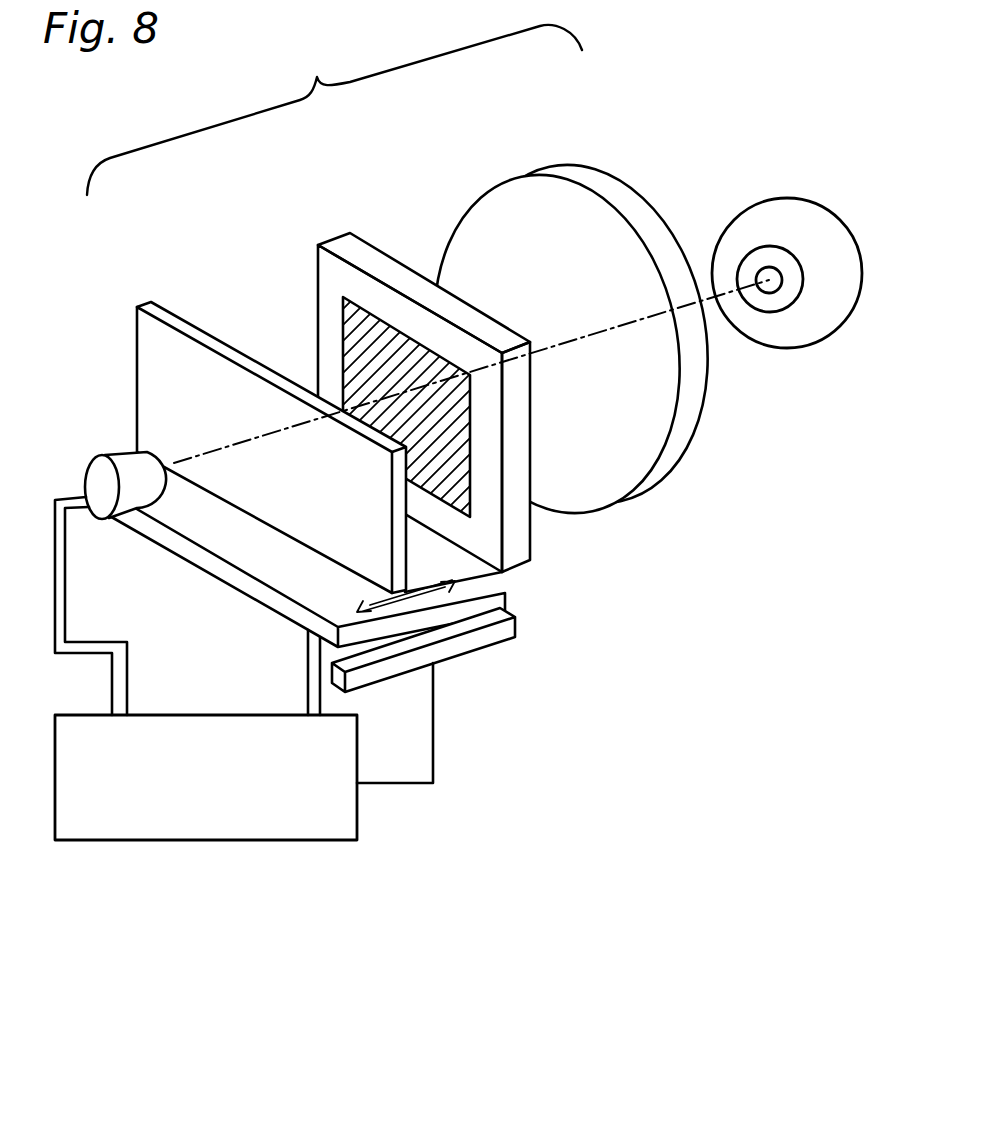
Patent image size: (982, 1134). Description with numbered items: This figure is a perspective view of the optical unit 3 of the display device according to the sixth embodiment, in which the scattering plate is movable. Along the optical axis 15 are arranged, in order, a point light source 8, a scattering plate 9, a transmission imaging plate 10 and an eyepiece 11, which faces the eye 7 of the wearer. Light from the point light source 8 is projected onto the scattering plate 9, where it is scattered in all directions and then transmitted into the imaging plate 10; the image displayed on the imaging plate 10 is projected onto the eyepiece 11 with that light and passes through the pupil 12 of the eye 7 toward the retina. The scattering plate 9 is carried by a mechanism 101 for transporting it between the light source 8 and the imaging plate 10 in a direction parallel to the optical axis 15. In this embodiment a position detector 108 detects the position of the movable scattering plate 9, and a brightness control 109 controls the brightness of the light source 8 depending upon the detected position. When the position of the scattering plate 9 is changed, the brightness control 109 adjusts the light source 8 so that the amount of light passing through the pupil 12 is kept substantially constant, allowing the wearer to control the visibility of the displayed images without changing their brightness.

The optical unit 3 is at (334, 110).
The eye 7 is at (770, 197).
The point light source 8 is at (133, 450).
The scattering plate 9 is at (150, 304).
The transmission imaging plate 10 is at (365, 333).
The eyepiece 11 is at (500, 198).
The pupil 12 is at (770, 293).
The optical axis 15 is at (587, 337).
The mechanism for transporting the scattering plate 101 is at (273, 603).
The position detector 108 is at (517, 629).
The brightness control 109 is at (258, 842).